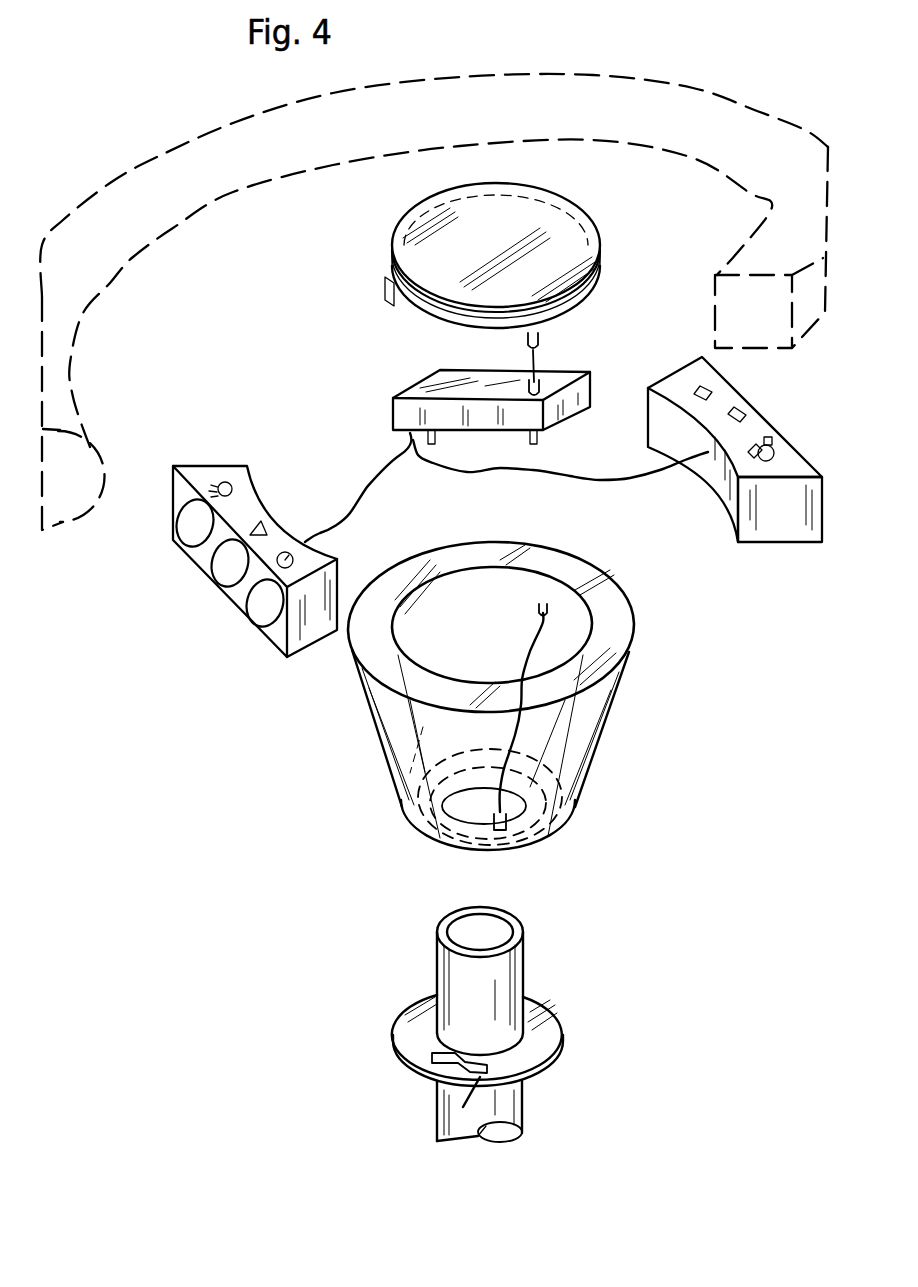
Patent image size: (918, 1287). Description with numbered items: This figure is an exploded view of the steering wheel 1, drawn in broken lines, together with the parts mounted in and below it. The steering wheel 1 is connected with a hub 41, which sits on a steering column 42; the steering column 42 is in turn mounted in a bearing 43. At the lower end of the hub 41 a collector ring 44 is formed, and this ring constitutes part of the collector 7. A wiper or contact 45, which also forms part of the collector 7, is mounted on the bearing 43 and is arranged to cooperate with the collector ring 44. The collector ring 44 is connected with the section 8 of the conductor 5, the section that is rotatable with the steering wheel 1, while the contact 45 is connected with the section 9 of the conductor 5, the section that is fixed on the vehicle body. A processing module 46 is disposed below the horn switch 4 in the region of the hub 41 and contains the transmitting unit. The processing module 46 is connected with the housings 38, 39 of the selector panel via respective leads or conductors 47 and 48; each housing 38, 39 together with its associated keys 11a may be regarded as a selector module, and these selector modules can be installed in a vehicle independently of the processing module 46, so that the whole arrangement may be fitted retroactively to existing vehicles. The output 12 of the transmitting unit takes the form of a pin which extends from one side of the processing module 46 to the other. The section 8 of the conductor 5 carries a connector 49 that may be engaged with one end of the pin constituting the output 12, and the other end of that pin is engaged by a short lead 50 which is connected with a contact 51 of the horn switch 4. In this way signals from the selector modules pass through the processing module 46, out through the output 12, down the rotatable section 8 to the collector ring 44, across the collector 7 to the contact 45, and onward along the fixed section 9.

The steering wheel 1 is at (575, 95).
The horn switch 4 is at (475, 213).
The conductor 5 is at (529, 660).
The collector 7 is at (507, 698).
The section of the conductor 8 is at (525, 722).
The section of the conductor 9 is at (470, 1097).
The keys 11a is at (193, 533).
The output of the transmitting unit 12 is at (539, 441).
The housing of the selector panel 38 is at (246, 543).
The housing of the selector panel 39 is at (788, 462).
The hub 41 is at (393, 733).
The steering column 42 is at (508, 972).
The bearing 43 is at (560, 1033).
The collector ring 44 is at (535, 818).
The wiper or contact 45 is at (455, 1060).
The processing module 46 is at (435, 386).
The lead or conductor 47 is at (367, 485).
The lead or conductor 48 is at (658, 475).
The connector 49 is at (552, 614).
The short lead 50 is at (527, 357).
The contact of the horn switch 51 is at (541, 342).